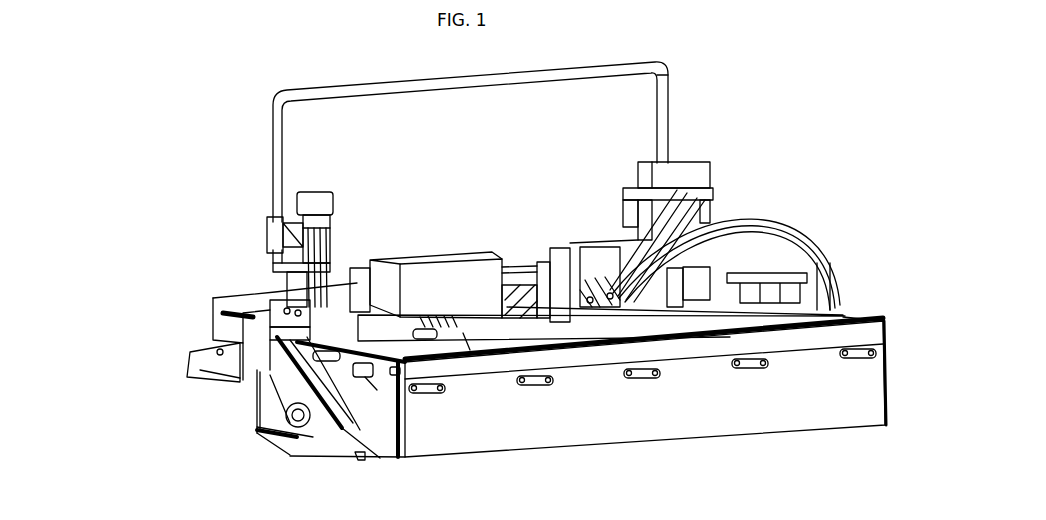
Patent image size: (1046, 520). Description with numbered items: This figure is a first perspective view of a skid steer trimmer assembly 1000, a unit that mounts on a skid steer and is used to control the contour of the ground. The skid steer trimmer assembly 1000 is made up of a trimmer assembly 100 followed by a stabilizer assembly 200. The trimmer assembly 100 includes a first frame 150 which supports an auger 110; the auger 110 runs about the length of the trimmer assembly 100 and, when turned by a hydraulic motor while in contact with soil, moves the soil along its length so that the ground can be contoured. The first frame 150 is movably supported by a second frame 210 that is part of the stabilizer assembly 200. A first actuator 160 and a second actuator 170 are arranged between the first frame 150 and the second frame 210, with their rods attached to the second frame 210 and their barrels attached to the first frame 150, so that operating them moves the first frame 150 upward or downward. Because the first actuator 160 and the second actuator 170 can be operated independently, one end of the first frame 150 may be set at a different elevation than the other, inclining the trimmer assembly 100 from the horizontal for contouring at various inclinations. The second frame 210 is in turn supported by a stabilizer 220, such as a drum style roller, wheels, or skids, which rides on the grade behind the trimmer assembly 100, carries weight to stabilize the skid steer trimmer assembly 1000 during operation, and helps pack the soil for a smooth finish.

The skid steer trimmer assembly 1000 is at (136, 228).
The trimmer assembly 100 is at (872, 313).
The auger 110 is at (340, 453).
The first frame 150 is at (842, 317).
The first actuator 160 is at (290, 243).
The second actuator 170 is at (700, 211).
The stabilizer assembly 200 is at (213, 298).
The second frame 210 is at (252, 300).
The stabilizer 220 is at (233, 405).